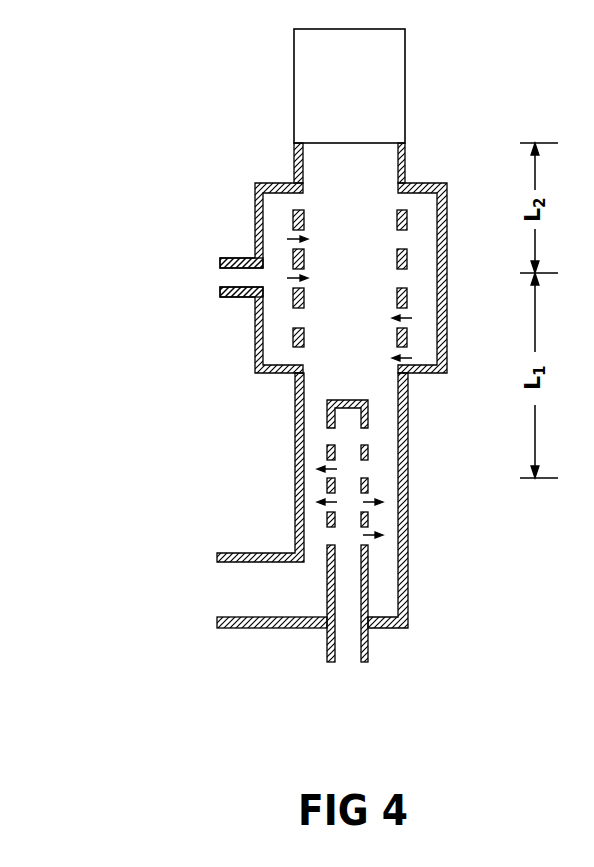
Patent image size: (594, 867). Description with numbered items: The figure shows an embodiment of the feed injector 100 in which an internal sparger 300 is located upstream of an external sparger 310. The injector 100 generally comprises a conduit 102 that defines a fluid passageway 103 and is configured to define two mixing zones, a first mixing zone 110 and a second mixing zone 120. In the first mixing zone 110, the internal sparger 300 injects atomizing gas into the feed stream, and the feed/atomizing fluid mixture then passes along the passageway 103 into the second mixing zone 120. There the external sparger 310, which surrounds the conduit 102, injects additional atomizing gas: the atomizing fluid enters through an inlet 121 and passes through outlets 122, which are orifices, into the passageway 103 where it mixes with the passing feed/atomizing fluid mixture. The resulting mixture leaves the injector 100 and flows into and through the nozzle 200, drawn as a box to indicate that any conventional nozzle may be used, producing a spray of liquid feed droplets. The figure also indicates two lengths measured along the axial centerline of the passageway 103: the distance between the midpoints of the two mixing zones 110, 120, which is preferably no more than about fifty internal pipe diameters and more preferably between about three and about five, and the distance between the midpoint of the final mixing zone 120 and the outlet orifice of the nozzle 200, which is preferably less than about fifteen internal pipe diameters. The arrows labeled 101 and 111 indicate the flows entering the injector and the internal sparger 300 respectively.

The feed injector 100 is at (193, 415).
The first gas inlet flow 101 is at (213, 592).
The conduit 102 is at (405, 558).
The fluid passageway 103 is at (372, 341).
The first mixing zone 110 is at (375, 487).
The second gas inlet flow 111 is at (350, 668).
The second mixing zone 120 is at (348, 230).
The inlet 121 is at (217, 278).
The outlets 122 is at (405, 278).
The nozzle 200 is at (405, 78).
The internal sparger 300 is at (370, 603).
The external sparger 310 is at (255, 208).